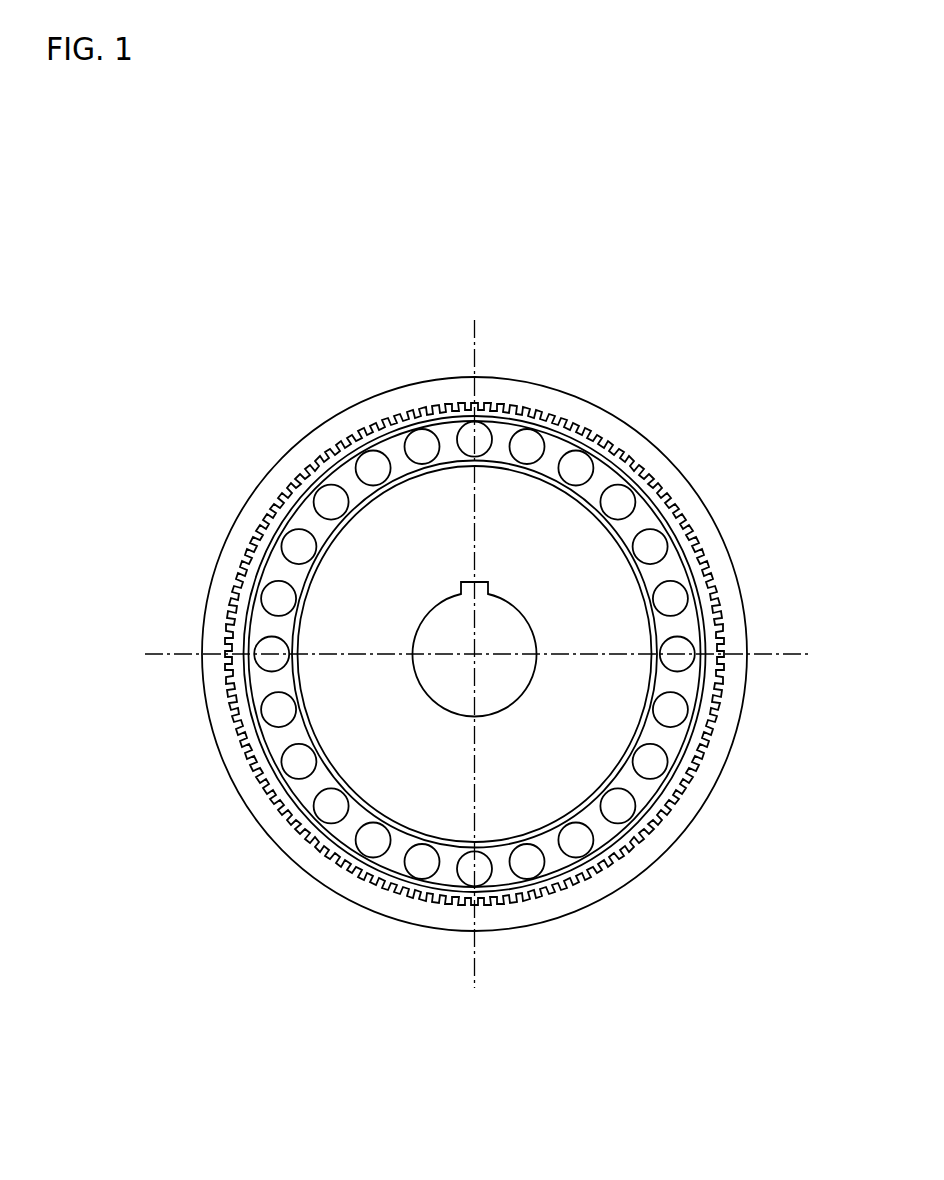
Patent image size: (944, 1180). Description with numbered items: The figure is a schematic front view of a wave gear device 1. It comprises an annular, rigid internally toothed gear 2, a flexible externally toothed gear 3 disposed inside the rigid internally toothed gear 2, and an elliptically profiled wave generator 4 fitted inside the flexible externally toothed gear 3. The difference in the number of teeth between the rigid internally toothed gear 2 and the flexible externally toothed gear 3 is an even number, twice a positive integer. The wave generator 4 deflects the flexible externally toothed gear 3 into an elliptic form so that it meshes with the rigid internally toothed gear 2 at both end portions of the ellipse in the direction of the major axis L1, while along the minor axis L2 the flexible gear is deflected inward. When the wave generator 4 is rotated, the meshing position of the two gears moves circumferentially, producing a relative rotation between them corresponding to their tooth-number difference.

The wave gear device 1 is at (681, 387).
The rigid internally toothed gear 2 is at (710, 531).
The flexible externally toothed gear 3 is at (720, 585).
The wave generator 4 is at (637, 677).
The major axis L1 is at (476, 533).
The minor axis L2 is at (349, 657).